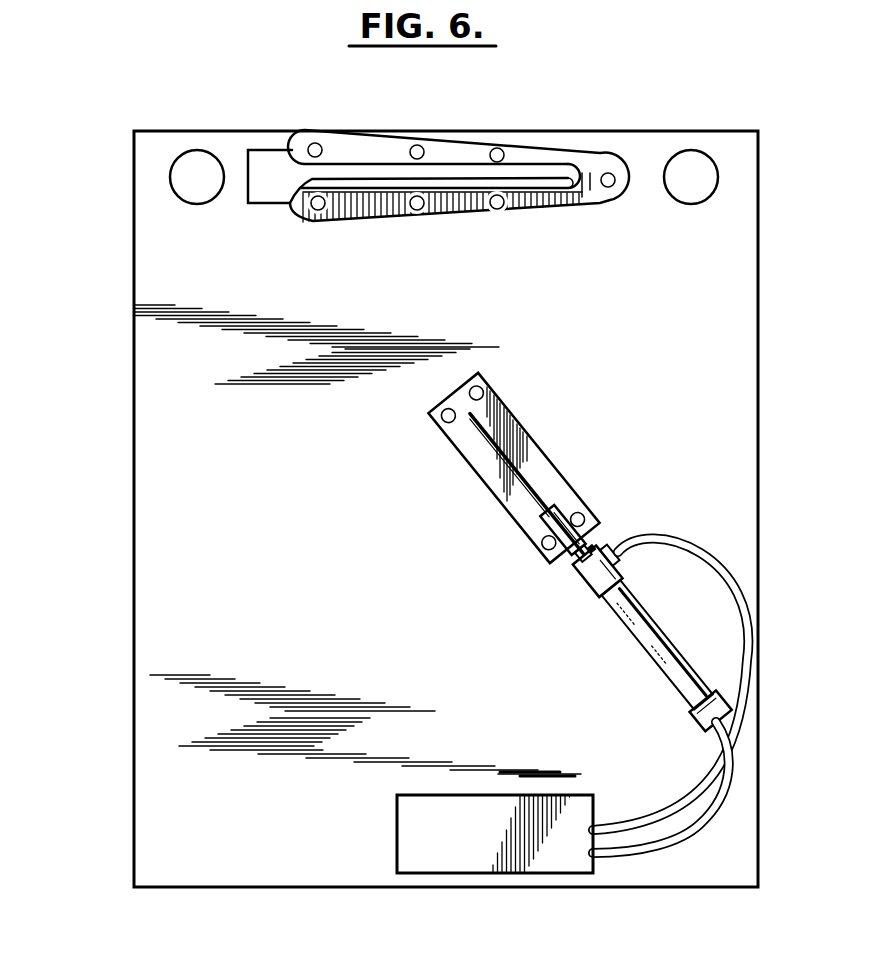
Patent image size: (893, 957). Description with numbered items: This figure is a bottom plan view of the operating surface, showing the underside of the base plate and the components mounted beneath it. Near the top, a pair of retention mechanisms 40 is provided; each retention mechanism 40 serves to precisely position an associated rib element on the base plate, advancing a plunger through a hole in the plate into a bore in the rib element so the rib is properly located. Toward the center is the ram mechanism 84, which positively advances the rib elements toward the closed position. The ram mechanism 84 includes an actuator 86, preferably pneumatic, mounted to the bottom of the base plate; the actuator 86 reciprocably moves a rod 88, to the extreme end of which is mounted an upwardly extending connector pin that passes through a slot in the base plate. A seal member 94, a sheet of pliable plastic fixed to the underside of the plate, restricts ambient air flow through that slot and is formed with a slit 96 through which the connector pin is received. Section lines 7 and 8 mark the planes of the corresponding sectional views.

The section line 7- 7 is at (80, 143).
The section line 8- 8 is at (673, 493).
The retention mechanism 40 is at (192, 215).
The ram mechanism 84 is at (548, 630).
The actuator 86 is at (650, 652).
The rod 88 is at (588, 547).
The seal member 94 is at (520, 424).
The slit 96 is at (488, 445).